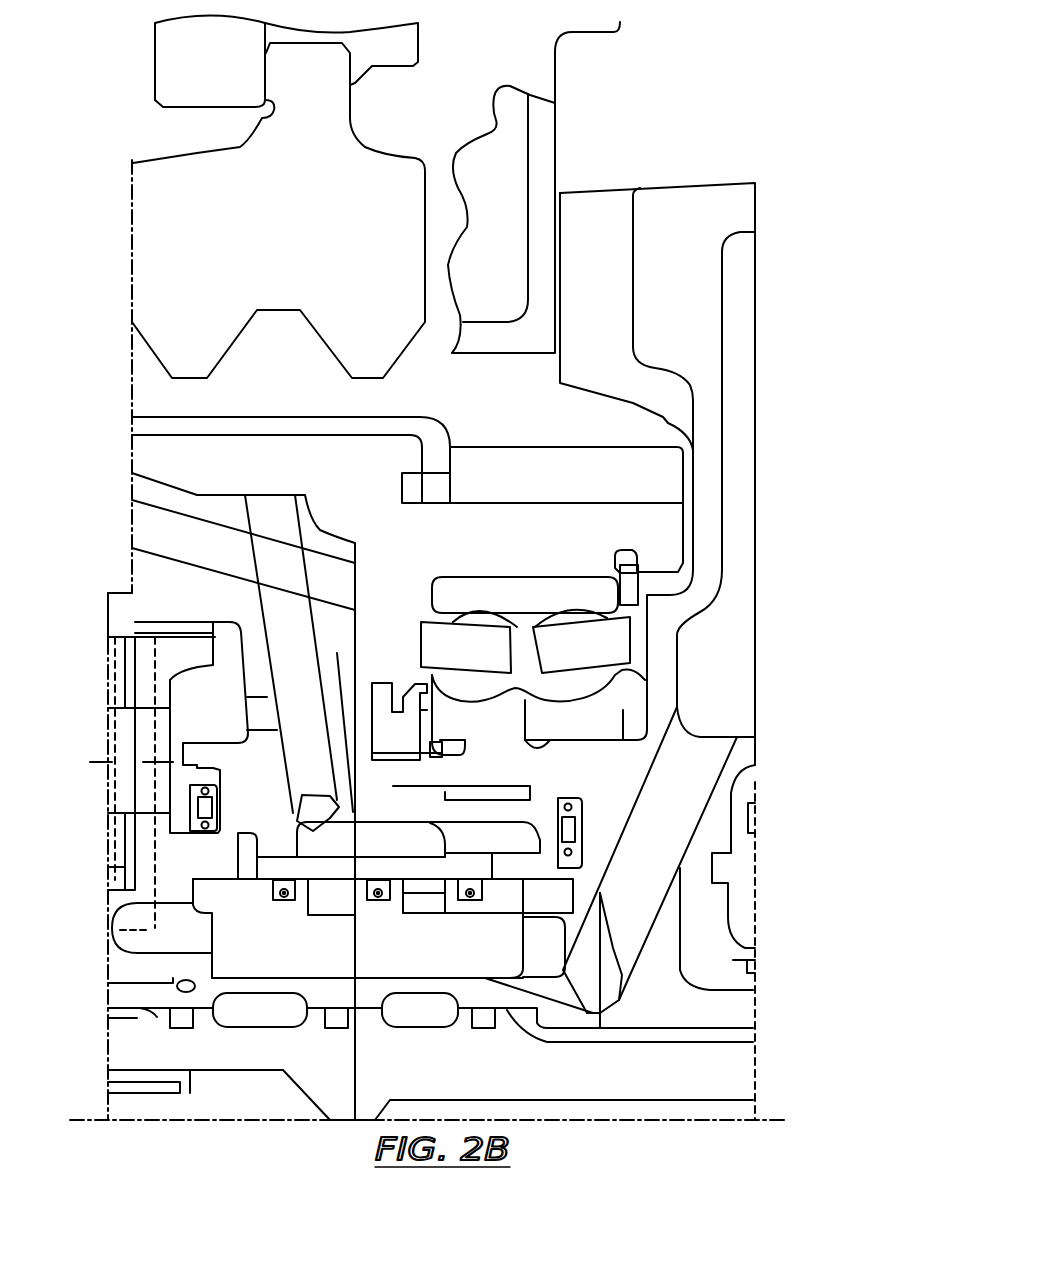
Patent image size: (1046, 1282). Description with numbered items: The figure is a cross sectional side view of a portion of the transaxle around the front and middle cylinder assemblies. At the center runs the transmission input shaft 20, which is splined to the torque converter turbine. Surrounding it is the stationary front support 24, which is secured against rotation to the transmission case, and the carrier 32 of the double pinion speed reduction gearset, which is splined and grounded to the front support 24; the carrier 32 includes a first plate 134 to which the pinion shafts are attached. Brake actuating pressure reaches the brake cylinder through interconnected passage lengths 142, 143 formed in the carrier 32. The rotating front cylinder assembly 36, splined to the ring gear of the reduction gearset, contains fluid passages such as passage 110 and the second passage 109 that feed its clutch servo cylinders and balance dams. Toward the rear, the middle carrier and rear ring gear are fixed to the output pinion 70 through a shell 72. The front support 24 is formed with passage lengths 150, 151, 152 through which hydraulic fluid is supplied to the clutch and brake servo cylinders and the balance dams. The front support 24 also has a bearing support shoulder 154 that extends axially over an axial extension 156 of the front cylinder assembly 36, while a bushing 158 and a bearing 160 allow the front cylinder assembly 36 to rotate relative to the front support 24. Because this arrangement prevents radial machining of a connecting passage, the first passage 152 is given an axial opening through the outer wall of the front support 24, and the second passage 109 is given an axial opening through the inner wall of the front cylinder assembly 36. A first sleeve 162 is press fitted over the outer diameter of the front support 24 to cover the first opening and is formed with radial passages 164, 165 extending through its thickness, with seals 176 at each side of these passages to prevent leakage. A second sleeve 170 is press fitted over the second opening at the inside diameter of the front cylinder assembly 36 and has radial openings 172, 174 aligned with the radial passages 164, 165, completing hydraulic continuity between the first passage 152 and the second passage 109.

The transmission input shaft 20 is at (618, 1090).
The front support 24 is at (678, 200).
The carrier 32 is at (176, 697).
The front cylinder assembly 36 is at (188, 503).
The output pinion 70 is at (520, 470).
The shell 72 is at (422, 430).
The second passage 109 is at (433, 853).
The fluid passage 110 is at (313, 676).
The first plate 134 is at (162, 687).
The passage length 142 is at (201, 947).
The passage length 143 is at (145, 772).
The passage length 150 is at (697, 810).
The passage length 151 is at (562, 965).
The first passage 152 is at (263, 957).
The bearing support shoulder 154 is at (578, 782).
The axial extension 156 is at (403, 807).
The bushing 158 is at (493, 793).
The bearing 160 is at (575, 825).
The first sleeve 162 is at (233, 893).
The radial passage 164 is at (340, 872).
The radial passage 165 is at (427, 903).
The second sleeve 170 is at (282, 863).
The radial opening 172 is at (345, 862).
The radial opening 174 is at (462, 867).
The seals 176 is at (284, 900).